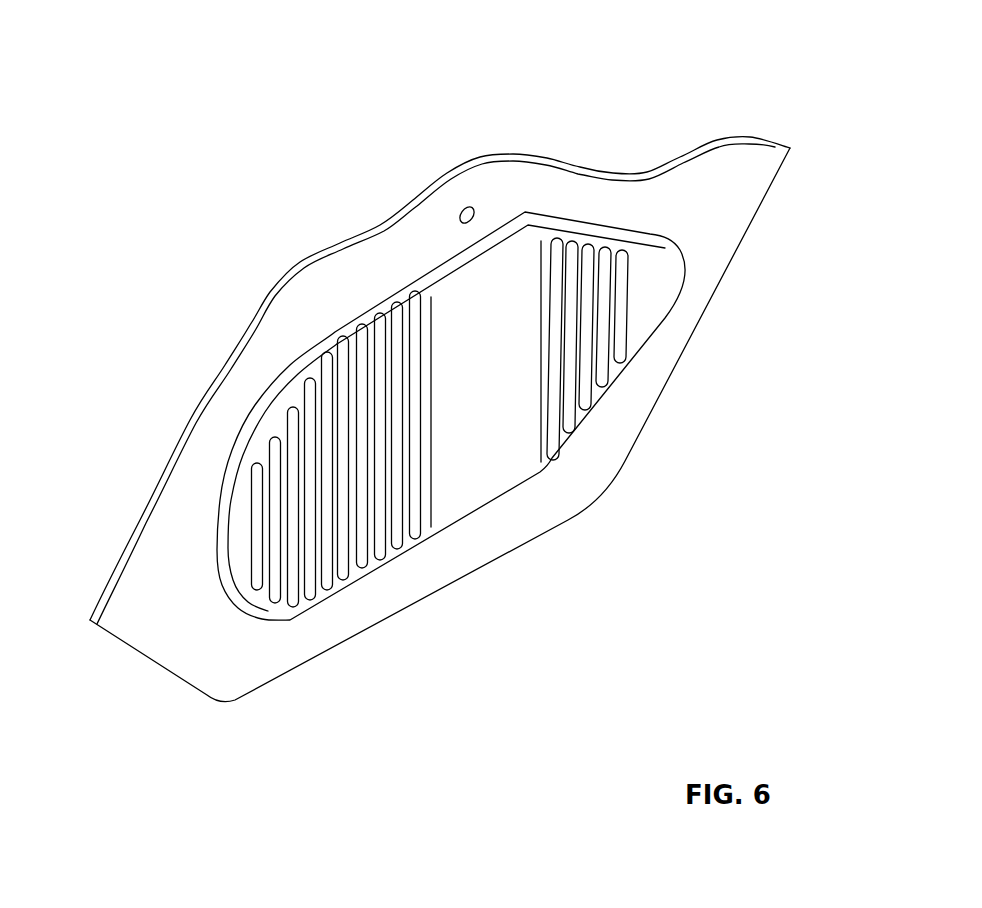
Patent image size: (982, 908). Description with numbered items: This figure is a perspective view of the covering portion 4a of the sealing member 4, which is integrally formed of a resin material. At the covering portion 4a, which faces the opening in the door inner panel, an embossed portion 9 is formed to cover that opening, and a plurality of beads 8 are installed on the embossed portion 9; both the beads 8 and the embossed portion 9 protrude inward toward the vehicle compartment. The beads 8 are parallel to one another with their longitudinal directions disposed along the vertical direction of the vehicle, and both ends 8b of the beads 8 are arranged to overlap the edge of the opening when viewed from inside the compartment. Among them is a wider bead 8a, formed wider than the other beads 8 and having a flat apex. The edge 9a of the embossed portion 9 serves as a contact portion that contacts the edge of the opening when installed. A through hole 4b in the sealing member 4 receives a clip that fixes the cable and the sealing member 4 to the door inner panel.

The sealing member 4 is at (753, 141).
The covering portion 4a is at (533, 267).
The through hole 4b is at (465, 206).
The beads 8 is at (326, 588).
The wider bead 8a is at (472, 498).
The ends 8b is at (460, 273).
The embossed portion 9 is at (413, 280).
The edge 9a is at (353, 313).